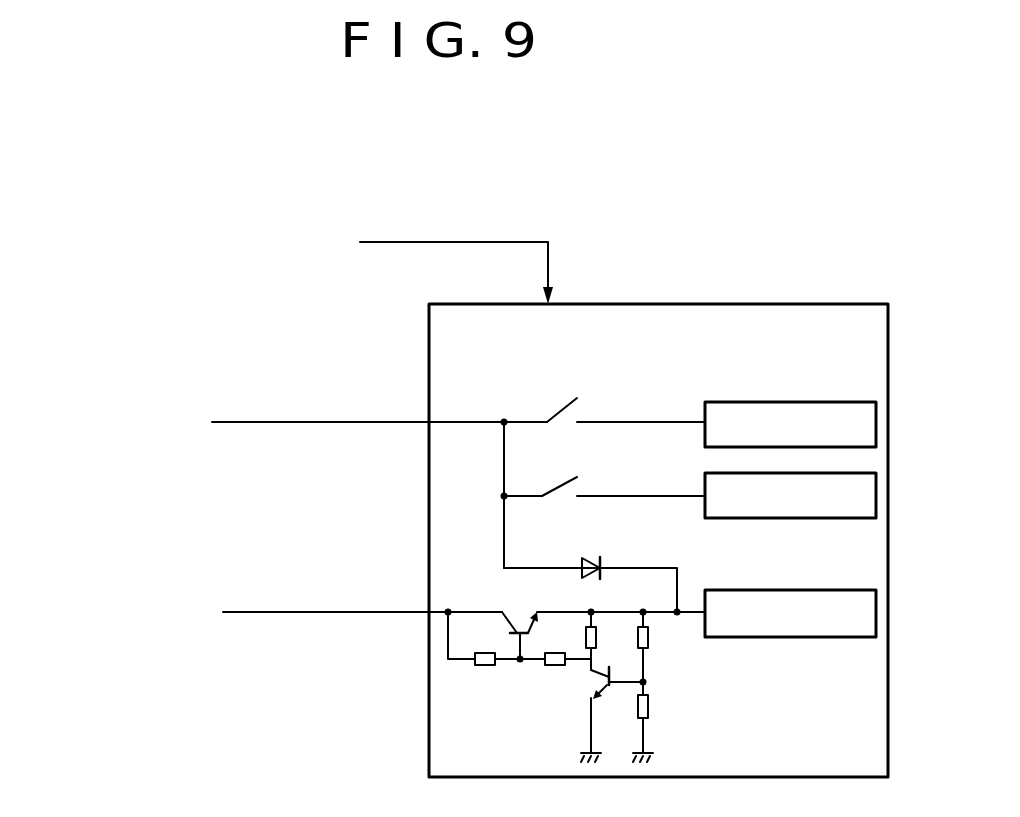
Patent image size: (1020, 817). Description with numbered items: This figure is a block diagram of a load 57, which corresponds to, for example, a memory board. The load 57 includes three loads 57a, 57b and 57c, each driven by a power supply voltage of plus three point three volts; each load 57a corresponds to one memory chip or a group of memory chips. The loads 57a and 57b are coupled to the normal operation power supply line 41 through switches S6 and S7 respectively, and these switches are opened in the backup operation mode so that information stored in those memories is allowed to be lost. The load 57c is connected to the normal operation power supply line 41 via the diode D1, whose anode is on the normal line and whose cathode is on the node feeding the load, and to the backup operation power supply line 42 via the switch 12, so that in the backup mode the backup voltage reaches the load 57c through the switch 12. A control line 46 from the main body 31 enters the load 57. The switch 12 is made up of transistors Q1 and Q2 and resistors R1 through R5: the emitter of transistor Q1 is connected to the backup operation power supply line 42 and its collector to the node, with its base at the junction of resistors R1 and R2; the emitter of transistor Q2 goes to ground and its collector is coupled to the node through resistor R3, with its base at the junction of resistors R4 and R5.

The switch 12 is at (611, 687).
The main body 31 is at (223, 243).
The normal operation power supply line 41 is at (317, 423).
The backup operation power supply line 42 is at (318, 614).
The signal line from main body 46 is at (433, 242).
The load 57 is at (821, 304).
The load 57a is at (771, 402).
The load 57b is at (742, 518).
The load 57c is at (779, 590).
The transistor Q1 is at (506, 635).
The transistor Q2 is at (612, 714).
The resistor R1 is at (488, 672).
The resistor R2 is at (557, 672).
The resistor R3 is at (612, 641).
The resistor R4 is at (664, 647).
The resistor R5 is at (663, 722).
The switch S6 is at (626, 394).
The switch S7 is at (604, 468).
The diode D1 is at (590, 570).